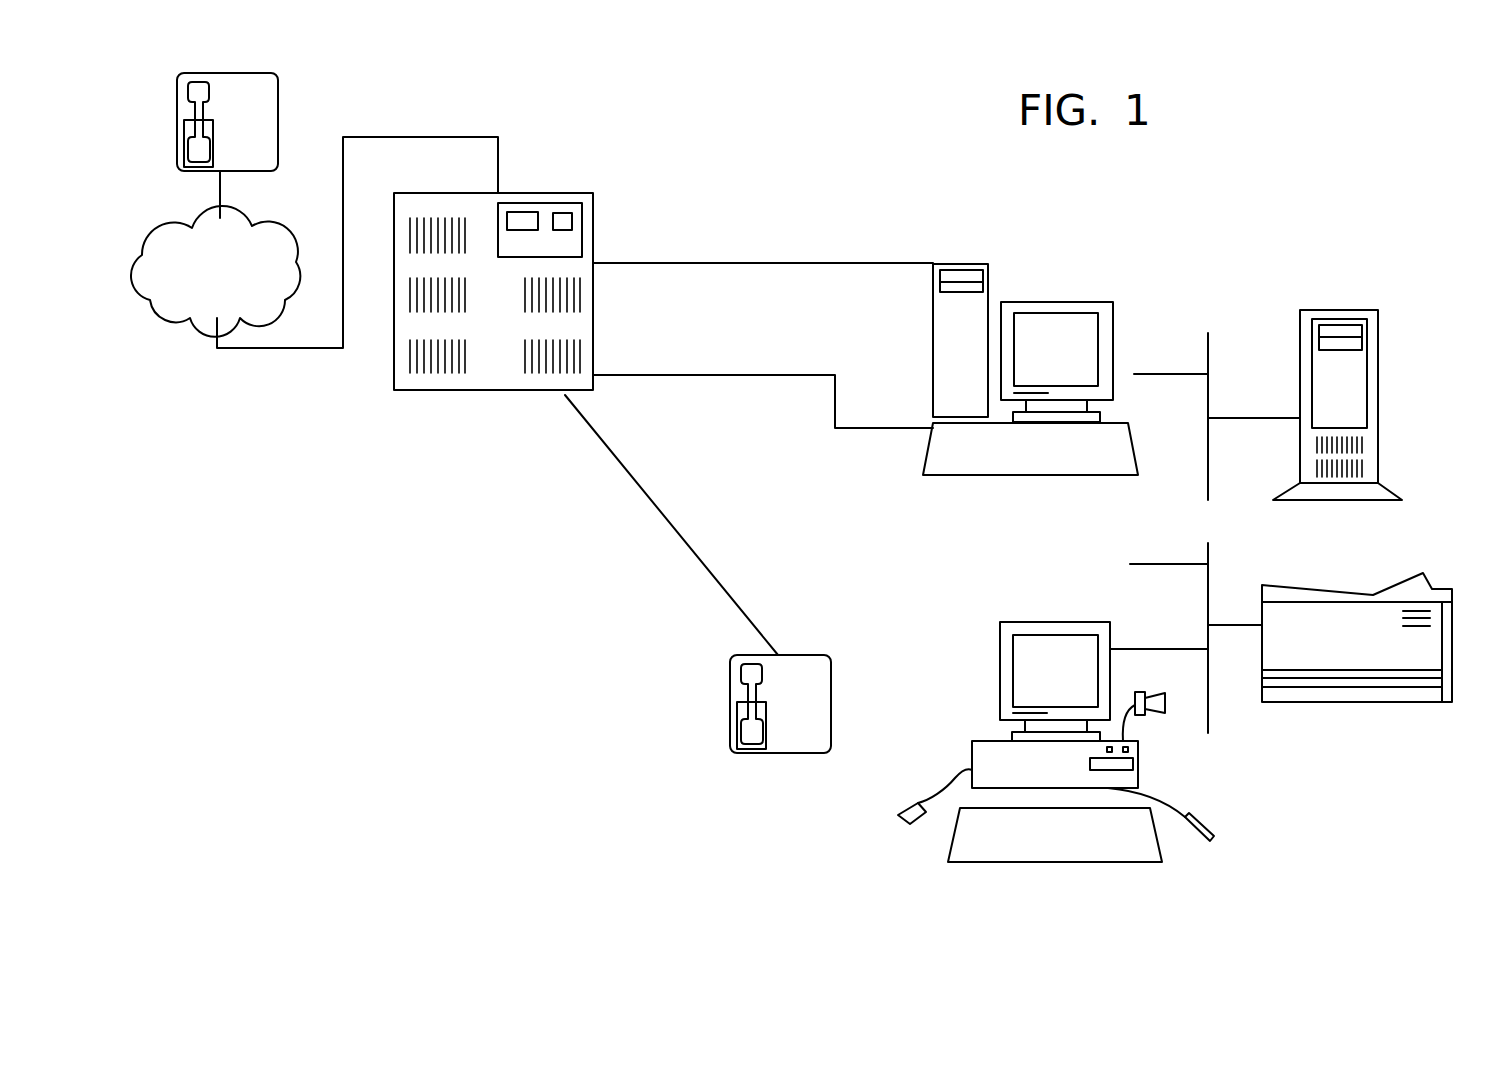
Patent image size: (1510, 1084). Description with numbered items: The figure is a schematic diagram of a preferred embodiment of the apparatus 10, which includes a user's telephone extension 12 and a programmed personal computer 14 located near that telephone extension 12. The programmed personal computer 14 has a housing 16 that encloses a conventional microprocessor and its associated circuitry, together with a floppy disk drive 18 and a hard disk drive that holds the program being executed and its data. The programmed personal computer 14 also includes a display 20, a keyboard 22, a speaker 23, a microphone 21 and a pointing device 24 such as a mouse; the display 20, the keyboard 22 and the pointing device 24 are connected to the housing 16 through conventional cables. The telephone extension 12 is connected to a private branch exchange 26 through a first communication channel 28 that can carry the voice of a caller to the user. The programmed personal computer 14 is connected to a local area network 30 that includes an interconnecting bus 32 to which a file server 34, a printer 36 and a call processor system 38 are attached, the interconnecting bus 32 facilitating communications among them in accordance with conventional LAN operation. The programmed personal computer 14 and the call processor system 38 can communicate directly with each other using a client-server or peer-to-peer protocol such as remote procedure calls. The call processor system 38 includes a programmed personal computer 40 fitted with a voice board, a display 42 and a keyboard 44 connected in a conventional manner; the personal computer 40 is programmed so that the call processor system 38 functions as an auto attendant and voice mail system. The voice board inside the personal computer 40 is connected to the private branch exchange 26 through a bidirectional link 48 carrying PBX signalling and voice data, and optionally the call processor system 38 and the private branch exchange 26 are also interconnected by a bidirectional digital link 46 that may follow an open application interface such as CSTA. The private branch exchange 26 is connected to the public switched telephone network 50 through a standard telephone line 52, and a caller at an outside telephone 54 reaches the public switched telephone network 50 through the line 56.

The apparatus 10 is at (603, 551).
The telephone extension 12 is at (832, 713).
The programmed personal computer 14 is at (1060, 728).
The housing 16 is at (985, 740).
The floppy disk drive 18 is at (1130, 748).
The display 20 is at (1050, 622).
The microphone 21 is at (1200, 818).
The keyboard 22 is at (950, 830).
The speaker 23 is at (1160, 688).
The pointing device 24 is at (912, 803).
The private branch exchange 26 is at (594, 220).
The first communication channel 28 is at (668, 517).
The local area network 30 is at (1313, 494).
The interconnecting bus 32 is at (1208, 400).
The file server 34 is at (1378, 362).
The printer 36 is at (1432, 585).
The call processor system 38 is at (1036, 352).
The programmed personal computer 40 is at (990, 280).
The display 42 is at (1080, 302).
The keyboard 44 is at (928, 443).
The bidirectional digital link 46 is at (766, 376).
The bidirectional link 48 is at (766, 264).
The public switched telephone network 50 is at (264, 220).
The standard telephone line 52 is at (498, 166).
The outside telephone 54 is at (280, 114).
The line 56 is at (216, 192).